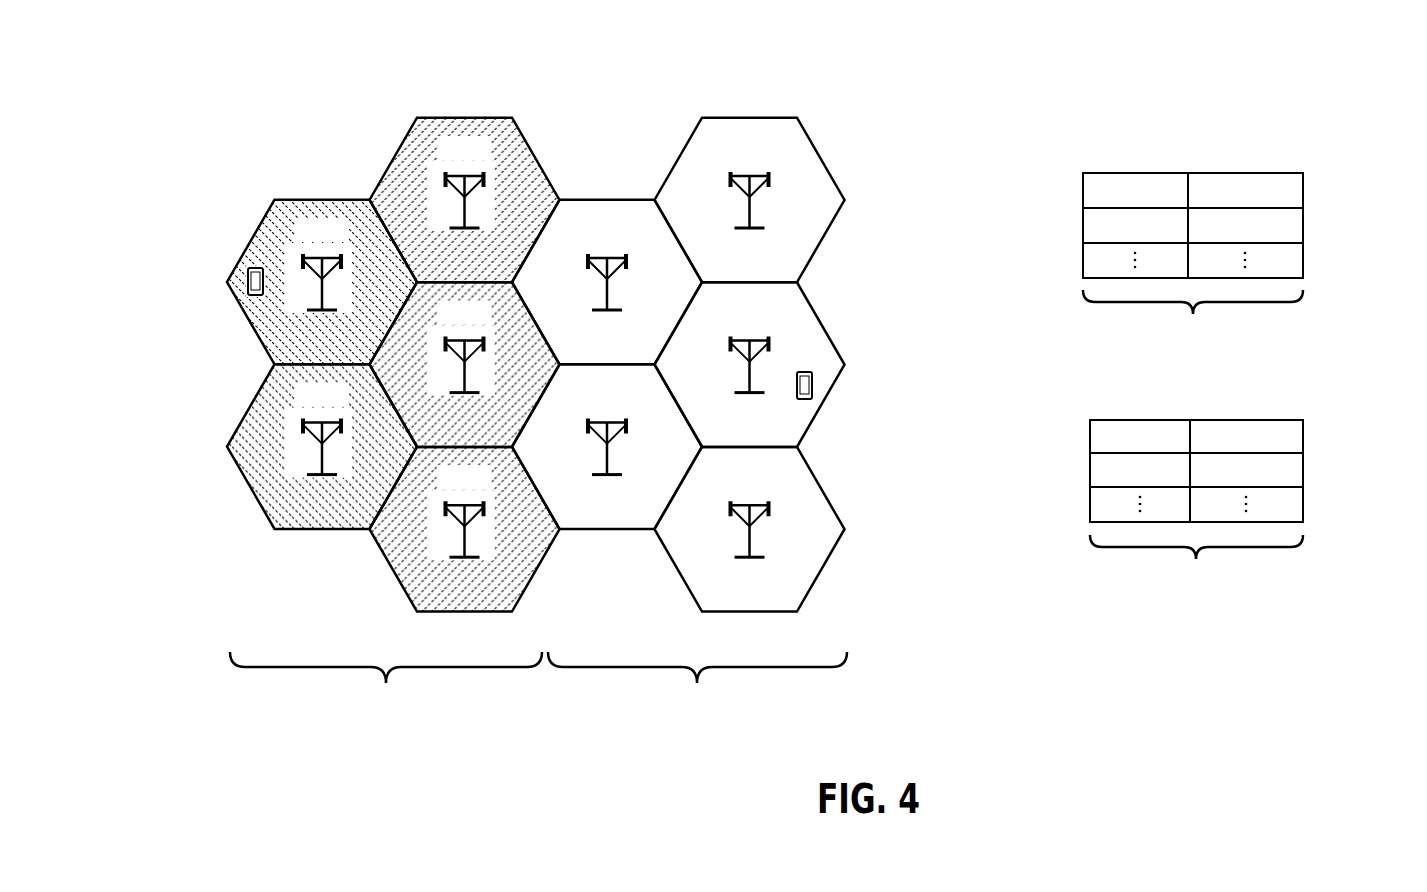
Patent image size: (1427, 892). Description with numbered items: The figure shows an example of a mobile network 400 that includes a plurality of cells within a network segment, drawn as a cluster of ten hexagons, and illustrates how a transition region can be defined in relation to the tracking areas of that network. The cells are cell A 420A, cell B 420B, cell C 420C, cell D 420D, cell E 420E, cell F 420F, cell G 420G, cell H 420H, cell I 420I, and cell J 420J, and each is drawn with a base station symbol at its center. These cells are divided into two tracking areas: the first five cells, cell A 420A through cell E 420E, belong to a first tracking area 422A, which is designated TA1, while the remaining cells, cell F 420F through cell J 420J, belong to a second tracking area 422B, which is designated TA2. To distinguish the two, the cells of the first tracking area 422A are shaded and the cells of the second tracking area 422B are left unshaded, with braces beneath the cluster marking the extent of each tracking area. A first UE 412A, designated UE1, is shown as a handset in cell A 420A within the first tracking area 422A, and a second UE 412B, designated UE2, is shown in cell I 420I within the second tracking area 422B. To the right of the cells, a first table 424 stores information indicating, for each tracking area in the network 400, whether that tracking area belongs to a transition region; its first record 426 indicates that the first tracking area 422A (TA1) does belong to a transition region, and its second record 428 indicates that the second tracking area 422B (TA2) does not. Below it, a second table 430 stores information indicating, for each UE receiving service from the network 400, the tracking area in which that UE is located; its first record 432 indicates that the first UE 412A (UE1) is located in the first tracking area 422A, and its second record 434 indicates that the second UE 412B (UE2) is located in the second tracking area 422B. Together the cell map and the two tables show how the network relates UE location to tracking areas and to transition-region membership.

The mobile network 400 is at (231, 85).
The first UE 412A is at (248, 280).
The second UE 412B is at (812, 386).
The cell A 420A is at (322, 282).
The cell B 420B is at (322, 446).
The cell C 420C is at (465, 200).
The cell D 420D is at (465, 364).
The cell E 420E is at (465, 529).
The cell F 420F is at (607, 282).
The cell G 420G is at (607, 446).
The cell H 420H is at (750, 200).
The cell I 420I is at (750, 364).
The cell J 420J is at (750, 529).
The first tracking area 422A is at (386, 680).
The second tracking area 422B is at (697, 680).
The first table 424 is at (1231, 257).
The first record 426 is at (1303, 192).
The second record 428 is at (1303, 228).
The second table 430 is at (1235, 503).
The first record 432 is at (1303, 437).
The second record 434 is at (1303, 470).